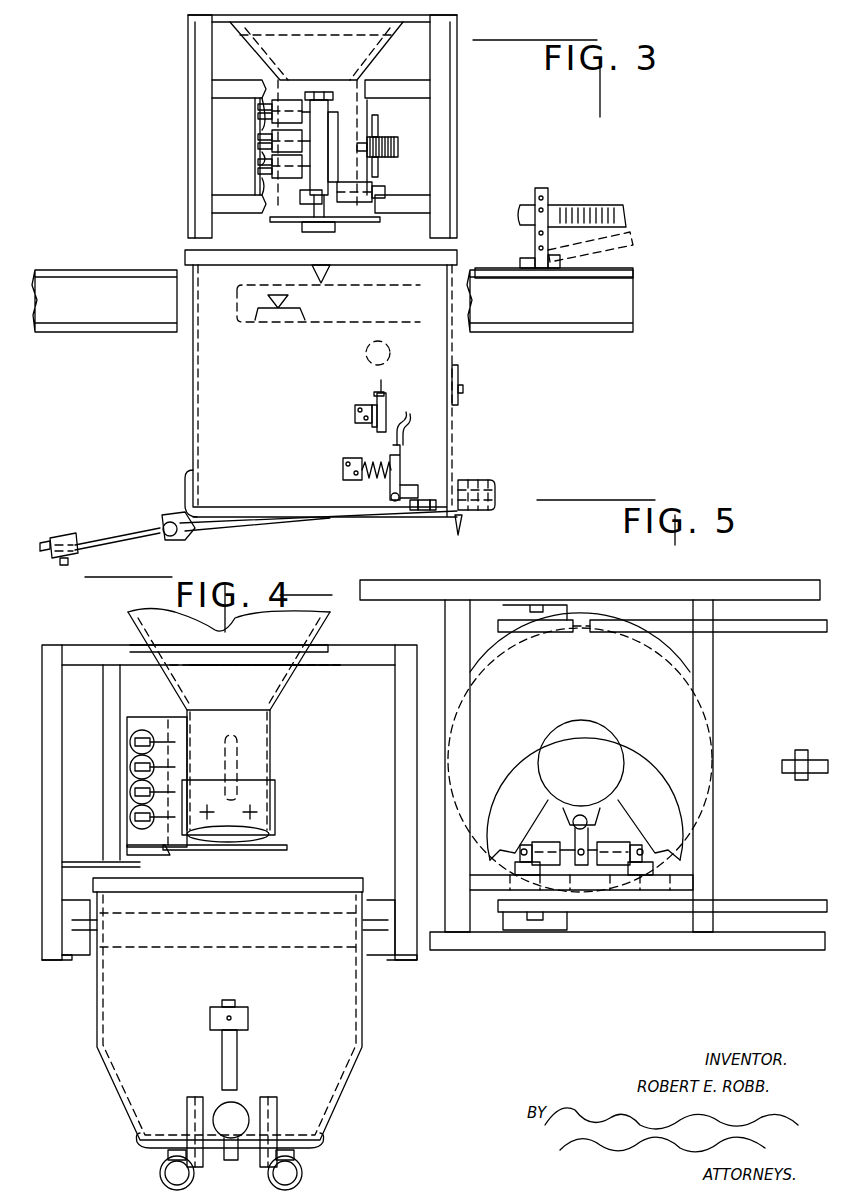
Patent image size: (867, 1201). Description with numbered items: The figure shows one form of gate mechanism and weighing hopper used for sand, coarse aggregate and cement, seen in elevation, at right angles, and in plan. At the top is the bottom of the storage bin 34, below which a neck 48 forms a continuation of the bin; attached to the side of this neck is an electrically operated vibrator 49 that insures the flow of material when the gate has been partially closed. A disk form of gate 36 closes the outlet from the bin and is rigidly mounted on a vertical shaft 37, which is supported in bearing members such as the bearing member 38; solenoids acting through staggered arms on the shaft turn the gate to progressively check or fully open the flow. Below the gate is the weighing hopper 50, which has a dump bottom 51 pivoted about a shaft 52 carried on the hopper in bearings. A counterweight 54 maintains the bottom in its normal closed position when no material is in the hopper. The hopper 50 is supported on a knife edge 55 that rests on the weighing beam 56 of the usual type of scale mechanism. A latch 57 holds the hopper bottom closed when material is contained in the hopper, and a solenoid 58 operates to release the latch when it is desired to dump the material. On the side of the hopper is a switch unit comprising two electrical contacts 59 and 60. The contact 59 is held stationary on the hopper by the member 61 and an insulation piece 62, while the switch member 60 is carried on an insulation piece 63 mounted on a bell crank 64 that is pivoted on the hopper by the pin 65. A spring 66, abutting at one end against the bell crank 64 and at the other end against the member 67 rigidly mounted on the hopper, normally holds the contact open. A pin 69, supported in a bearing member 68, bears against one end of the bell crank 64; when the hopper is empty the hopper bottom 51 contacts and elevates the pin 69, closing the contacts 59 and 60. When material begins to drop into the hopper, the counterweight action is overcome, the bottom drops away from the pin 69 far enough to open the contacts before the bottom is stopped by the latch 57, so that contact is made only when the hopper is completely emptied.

In FIG. 4, the storage bin 34 is at (330, 620).
In FIG. 3, the gate 36 is at (352, 218).
In FIG. 4, the gate 36 is at (280, 855).
In FIG. 5, the gate 36 is at (620, 746).
In FIG. 5, the vertical shaft 37 is at (598, 818).
In FIG. 3, the bearing member 38 is at (330, 92).
In FIG. 5, the bearing member 38 is at (592, 834).
In FIG. 3, the neck 48 is at (357, 140).
In FIG. 3, the vibrator 49 is at (398, 147).
In FIG. 4, the vibrator 49 is at (238, 775).
In FIG. 3, the weighing hopper 50 is at (190, 408).
In FIG. 3, the dump bottom 51 is at (207, 535).
In FIG. 3, the shaft 52 is at (166, 522).
In FIG. 3, the counterweight 54 is at (64, 534).
In FIG. 4, the counterweight 54 is at (260, 1183).
In FIG. 3, the knife edge 55 is at (327, 272).
In FIG. 3, the weighing beam 56 is at (377, 327).
In FIG. 3, the latch 57 is at (465, 526).
In FIG. 3, the solenoid 58 is at (498, 482).
In FIG. 4, the solenoid 58 is at (240, 1108).
In FIG. 3, the electrical contact 59 is at (386, 398).
In FIG. 3, the switch member 60 is at (410, 430).
In FIG. 3, the member 61 is at (353, 408).
In FIG. 3, the insulation piece 62 is at (372, 425).
In FIG. 3, the insulation piece 63 is at (405, 468).
In FIG. 3, the bell crank 64 is at (390, 484).
In FIG. 3, the pin 65 is at (394, 502).
In FIG. 3, the spring 66 is at (375, 460).
In FIG. 3, the member 67 is at (341, 472).
In FIG. 3, the bearing member 68 is at (434, 498).
In FIG. 3, the pin 69 is at (418, 512).